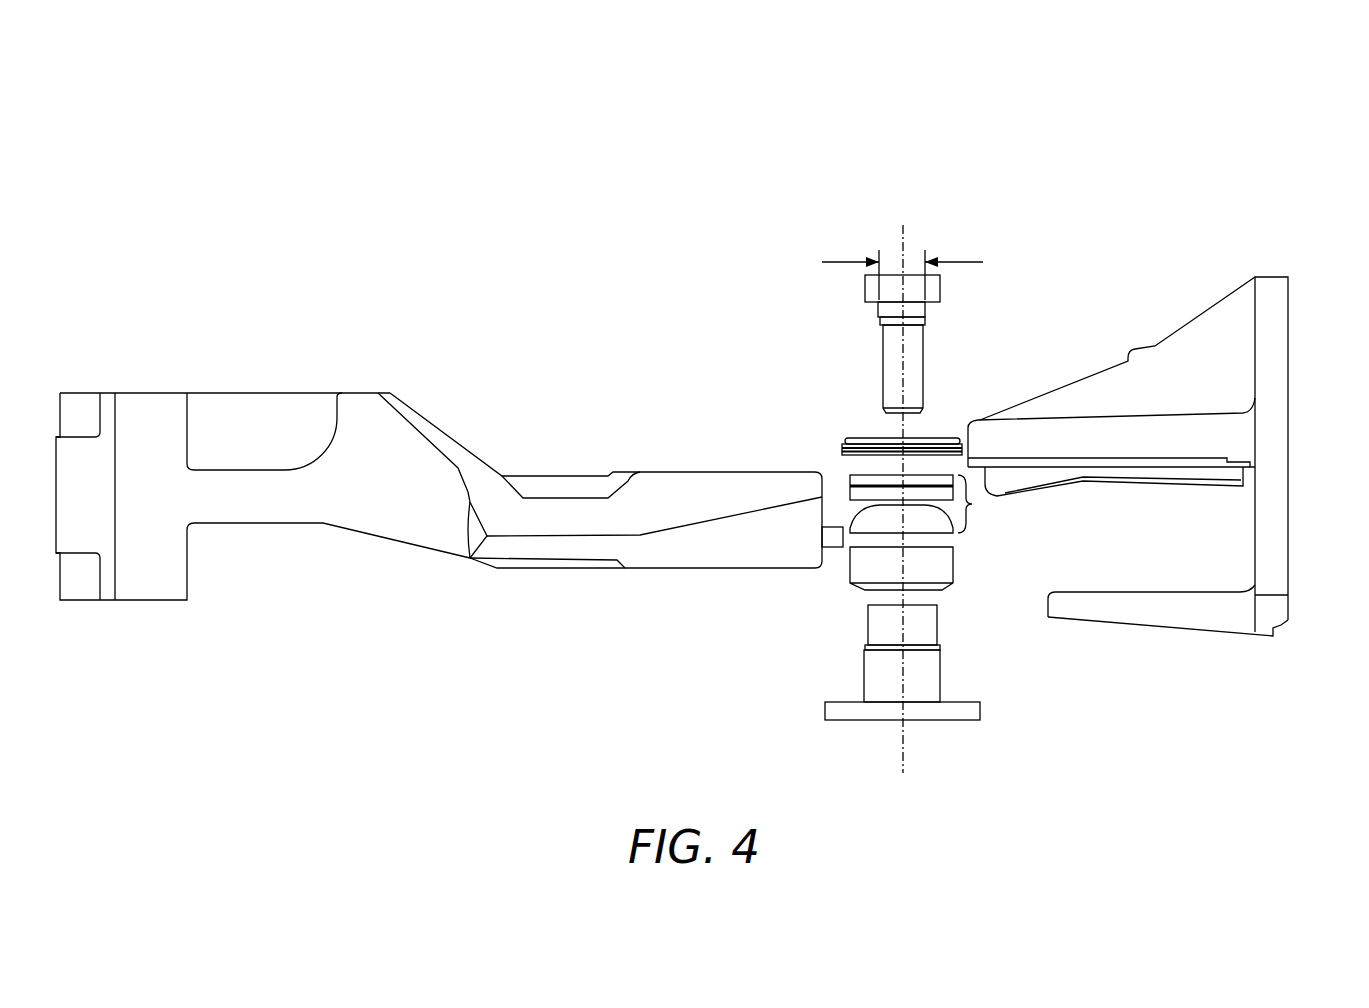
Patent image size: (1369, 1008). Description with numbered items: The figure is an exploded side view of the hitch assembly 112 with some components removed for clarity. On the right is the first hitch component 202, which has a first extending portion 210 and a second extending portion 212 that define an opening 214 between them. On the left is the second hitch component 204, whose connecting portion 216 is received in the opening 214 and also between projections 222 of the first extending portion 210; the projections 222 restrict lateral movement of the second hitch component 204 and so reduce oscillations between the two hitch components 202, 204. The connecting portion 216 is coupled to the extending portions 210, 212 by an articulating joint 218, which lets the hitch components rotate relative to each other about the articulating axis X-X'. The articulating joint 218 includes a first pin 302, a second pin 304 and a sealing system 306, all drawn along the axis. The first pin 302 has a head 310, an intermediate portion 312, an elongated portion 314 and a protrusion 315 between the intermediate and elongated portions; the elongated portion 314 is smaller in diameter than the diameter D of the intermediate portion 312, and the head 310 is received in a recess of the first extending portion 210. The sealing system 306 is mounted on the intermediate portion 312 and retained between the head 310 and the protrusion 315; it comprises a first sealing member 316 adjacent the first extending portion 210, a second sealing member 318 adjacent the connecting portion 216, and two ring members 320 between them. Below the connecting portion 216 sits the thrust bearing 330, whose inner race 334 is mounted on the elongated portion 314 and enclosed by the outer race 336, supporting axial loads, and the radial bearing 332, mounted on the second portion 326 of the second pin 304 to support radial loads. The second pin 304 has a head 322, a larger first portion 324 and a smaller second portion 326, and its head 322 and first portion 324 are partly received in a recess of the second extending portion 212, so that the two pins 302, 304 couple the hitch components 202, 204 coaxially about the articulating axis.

The hitch assembly 112 is at (378, 122).
The first hitch component 202 is at (1292, 266).
The second hitch component 204 is at (246, 347).
The first extending portion 210 is at (1028, 437).
The second extending portion 212 is at (1170, 613).
The opening 214 is at (1192, 552).
The connecting portion 216 is at (763, 545).
The articulating joint 218 is at (730, 350).
The projections 222 is at (1027, 477).
The first pin 302 is at (818, 337).
The second pin 304 is at (855, 625).
The sealing system 306 is at (835, 437).
The head 310 is at (938, 291).
The intermediate portion 312 is at (883, 310).
The elongated portion 314 is at (912, 363).
The protrusion 315 is at (882, 320).
The first sealing member 316 is at (946, 438).
The second sealing member 318 is at (830, 438).
The ring members 320 is at (845, 447).
The head 322 is at (835, 710).
The first portion 324 is at (933, 665).
The second portion 326 is at (930, 622).
The thrust bearing 330 is at (972, 504).
The radial bearing 332 is at (948, 566).
The inner race 334 is at (866, 524).
The outer race 336 is at (848, 478).